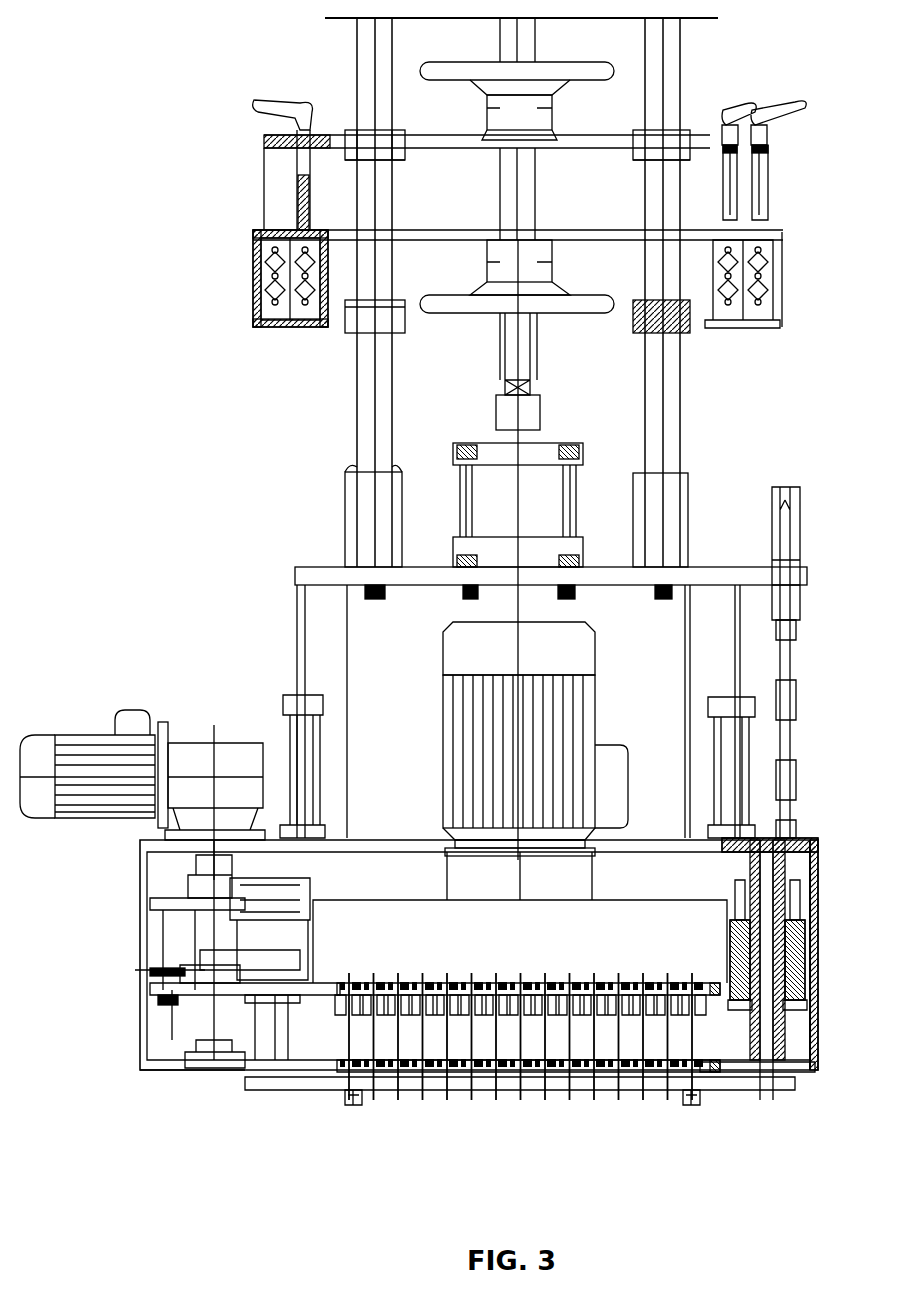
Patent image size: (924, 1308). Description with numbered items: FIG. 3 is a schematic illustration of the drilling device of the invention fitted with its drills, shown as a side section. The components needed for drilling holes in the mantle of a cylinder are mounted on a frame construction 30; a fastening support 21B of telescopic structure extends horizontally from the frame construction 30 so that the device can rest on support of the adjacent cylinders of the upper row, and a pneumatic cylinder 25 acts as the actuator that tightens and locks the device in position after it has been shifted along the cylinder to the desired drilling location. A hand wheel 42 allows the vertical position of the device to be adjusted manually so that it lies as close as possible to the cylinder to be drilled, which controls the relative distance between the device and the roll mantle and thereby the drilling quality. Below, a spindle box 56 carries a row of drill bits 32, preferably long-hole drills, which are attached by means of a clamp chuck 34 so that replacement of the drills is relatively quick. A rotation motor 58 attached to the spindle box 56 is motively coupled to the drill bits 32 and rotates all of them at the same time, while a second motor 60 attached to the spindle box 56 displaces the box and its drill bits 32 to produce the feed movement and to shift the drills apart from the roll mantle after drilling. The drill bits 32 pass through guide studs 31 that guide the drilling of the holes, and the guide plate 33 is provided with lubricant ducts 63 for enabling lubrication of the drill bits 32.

The fastening support 21B is at (252, 278).
The pneumatic cylinder 25 is at (528, 186).
The frame construction 30 is at (724, 466).
The guide studs 31 is at (362, 1110).
The drill bits 32 is at (345, 1042).
The guide plate 33 is at (312, 1095).
The clamp chuck 34 is at (352, 1005).
The wheel 42 is at (588, 62).
The spindle box 56 is at (645, 912).
The motor 58 is at (76, 735).
The motor 60 is at (590, 648).
The lubricant ducts 63 is at (590, 1066).